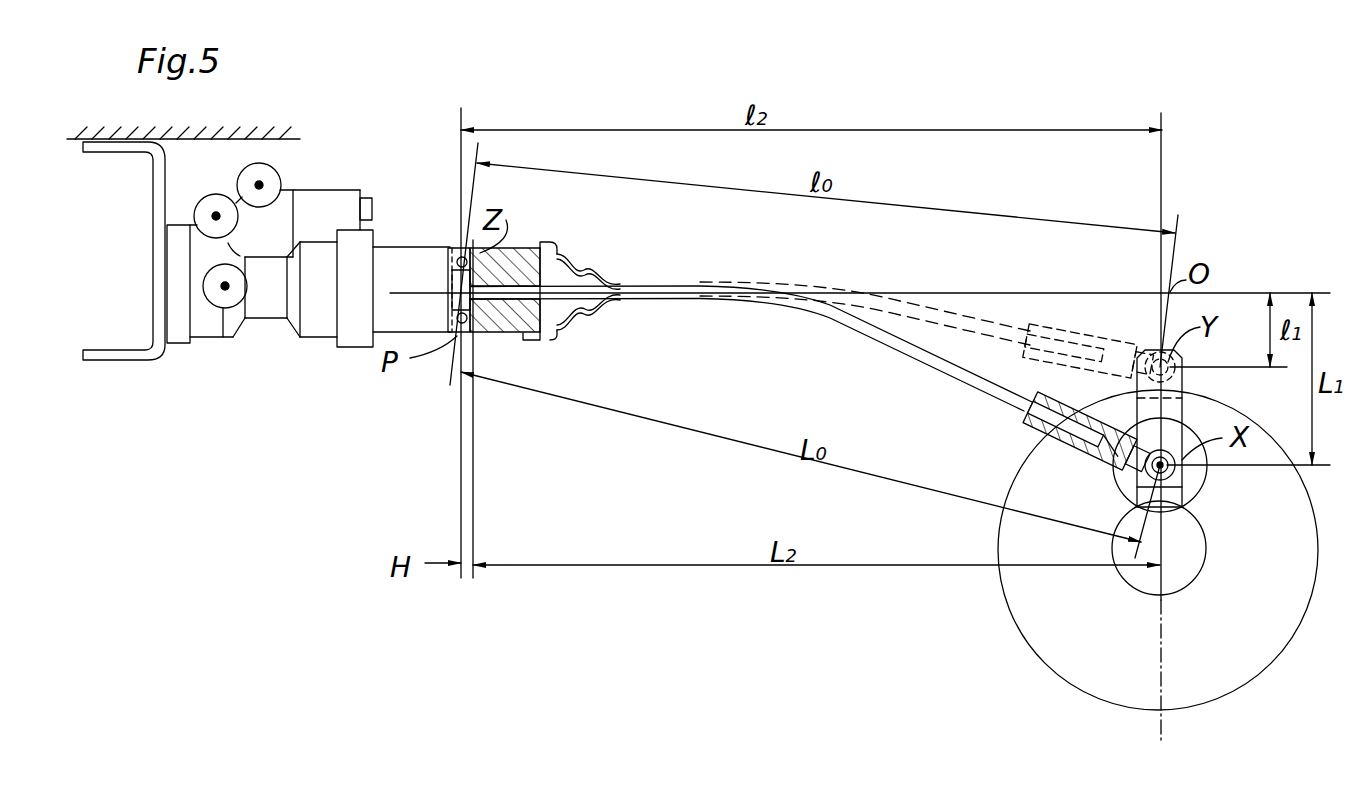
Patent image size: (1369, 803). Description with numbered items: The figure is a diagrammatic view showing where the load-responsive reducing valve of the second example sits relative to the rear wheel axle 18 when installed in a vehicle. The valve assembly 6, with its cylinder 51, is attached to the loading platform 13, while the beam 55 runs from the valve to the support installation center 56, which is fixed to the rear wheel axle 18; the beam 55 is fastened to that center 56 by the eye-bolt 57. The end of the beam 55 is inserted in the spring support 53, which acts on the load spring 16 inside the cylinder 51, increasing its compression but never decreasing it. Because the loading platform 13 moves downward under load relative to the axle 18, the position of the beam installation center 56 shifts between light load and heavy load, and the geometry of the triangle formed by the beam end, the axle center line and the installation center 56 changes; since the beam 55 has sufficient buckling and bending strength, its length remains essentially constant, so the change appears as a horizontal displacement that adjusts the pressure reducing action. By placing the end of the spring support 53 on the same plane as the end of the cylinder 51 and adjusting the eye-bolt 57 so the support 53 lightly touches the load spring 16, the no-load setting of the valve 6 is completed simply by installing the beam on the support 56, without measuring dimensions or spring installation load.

The loading platform 13 is at (278, 148).
The master cylinder 6 is at (272, 302).
The load spring 16 is at (459, 248).
The cylinder 51 is at (502, 333).
The spring support 53 is at (525, 243).
The beam 55 is at (905, 317).
The eye-bolt 57 is at (1138, 333).
The support installation center 56 is at (1187, 495).
The rear wheel axle 18 is at (1177, 570).